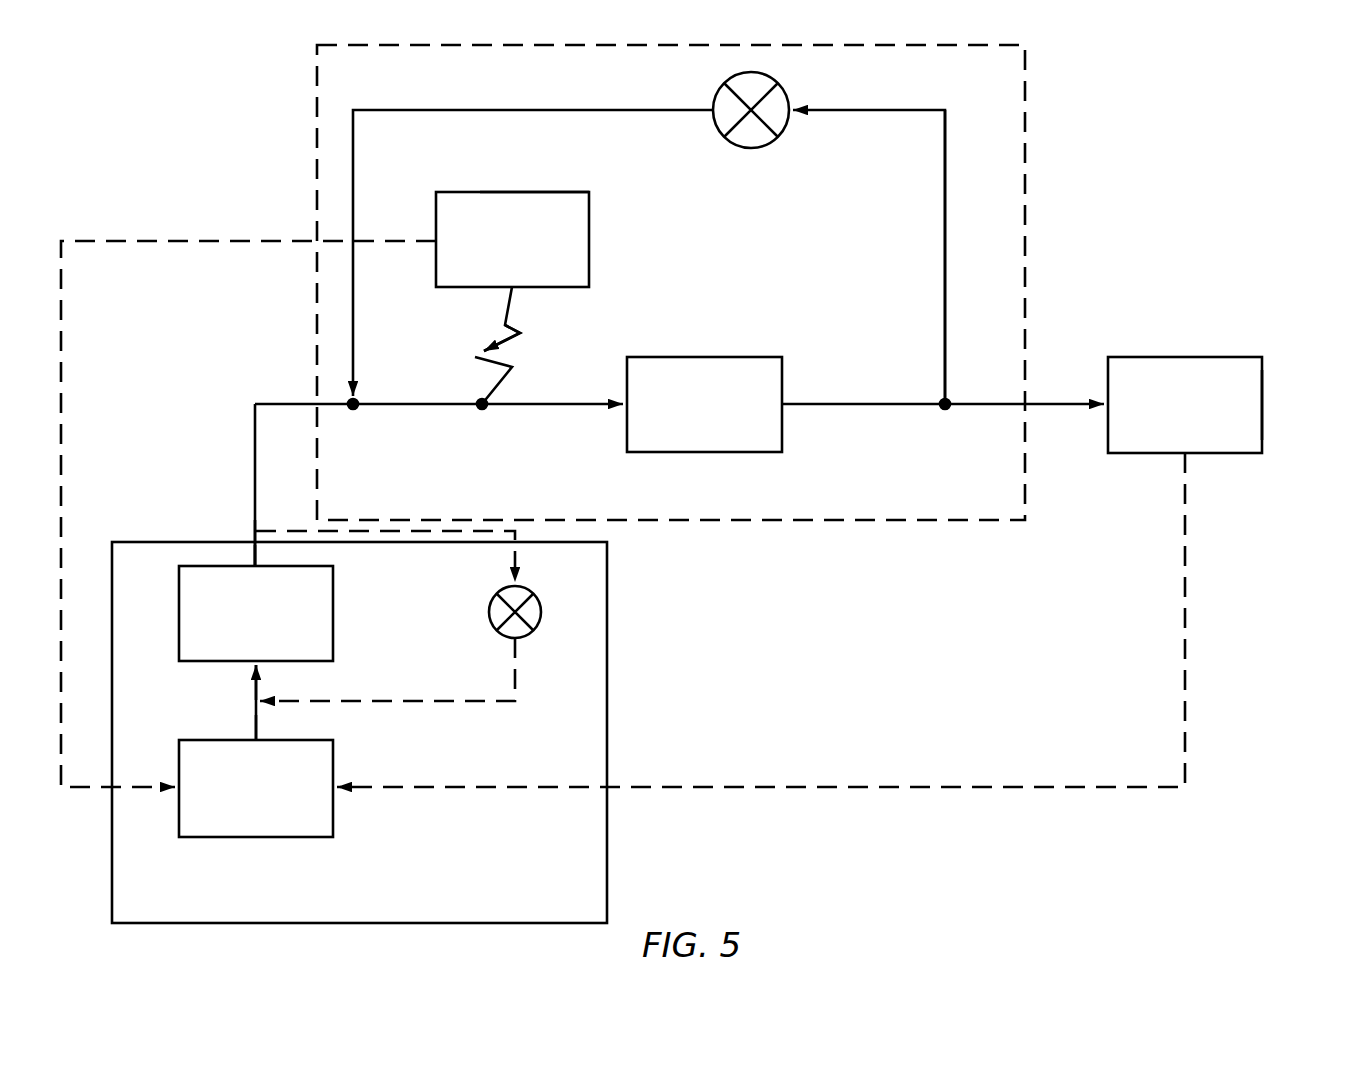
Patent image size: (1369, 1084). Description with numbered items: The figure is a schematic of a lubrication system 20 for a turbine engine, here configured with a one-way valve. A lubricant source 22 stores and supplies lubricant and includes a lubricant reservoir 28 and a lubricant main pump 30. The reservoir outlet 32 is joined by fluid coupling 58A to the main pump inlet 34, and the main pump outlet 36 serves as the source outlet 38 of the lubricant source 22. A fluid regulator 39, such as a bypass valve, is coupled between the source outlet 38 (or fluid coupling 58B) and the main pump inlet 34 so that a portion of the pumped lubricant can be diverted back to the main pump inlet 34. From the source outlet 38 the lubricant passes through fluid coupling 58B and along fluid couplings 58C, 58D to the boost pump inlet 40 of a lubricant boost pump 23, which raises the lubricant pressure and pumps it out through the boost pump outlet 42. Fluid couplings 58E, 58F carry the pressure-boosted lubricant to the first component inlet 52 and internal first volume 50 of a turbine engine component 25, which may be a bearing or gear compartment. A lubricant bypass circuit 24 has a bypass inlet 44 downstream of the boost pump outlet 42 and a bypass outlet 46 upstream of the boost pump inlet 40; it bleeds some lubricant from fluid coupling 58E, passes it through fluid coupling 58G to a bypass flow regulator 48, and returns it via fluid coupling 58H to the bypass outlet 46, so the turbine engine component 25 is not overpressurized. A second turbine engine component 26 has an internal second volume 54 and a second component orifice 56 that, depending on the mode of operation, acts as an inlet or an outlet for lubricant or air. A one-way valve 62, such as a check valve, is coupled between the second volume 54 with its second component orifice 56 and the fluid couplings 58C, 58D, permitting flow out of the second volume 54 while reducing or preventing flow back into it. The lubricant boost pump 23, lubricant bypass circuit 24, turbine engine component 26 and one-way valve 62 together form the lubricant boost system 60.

The lubrication system 20 is at (1143, 117).
The lubricant source 22 is at (613, 888).
The lubricant boost pump 23 is at (696, 352).
The lubricant bypass circuit 24 is at (950, 154).
The turbine engine component 25 is at (1185, 353).
The turbine engine component 26 is at (600, 239).
The lubricant reservoir 28 is at (345, 758).
The lubricant main pump 30 is at (348, 620).
The reservoir outlet 32 is at (258, 740).
The main pump inlet 34 is at (252, 667).
The main pump outlet 36 is at (253, 562).
The source outlet 38 is at (254, 540).
The fluid regulator 39 is at (540, 617).
The boost pump inlet 40 is at (623, 410).
The boost pump outlet 42 is at (783, 407).
The bypass inlet 44 is at (949, 401).
The bypass outlet 46 is at (356, 399).
The bypass flow regulator 48 is at (757, 152).
The first volume 50 is at (1263, 400).
The first component inlet 52 is at (1103, 412).
The second volume 54 is at (553, 192).
The second component orifice 56 is at (507, 290).
The fluid coupling 58A is at (253, 712).
The fluid coupling 58B is at (253, 435).
The fluid coupling 58C is at (425, 406).
The fluid coupling 58D is at (542, 406).
The fluid coupling 58E is at (875, 406).
The fluid coupling 58F is at (987, 406).
The fluid coupling 58G is at (945, 265).
The fluid coupling 58H is at (416, 112).
The lubricant boost system 60 is at (1030, 88).
The one-way valve 62 is at (532, 348).